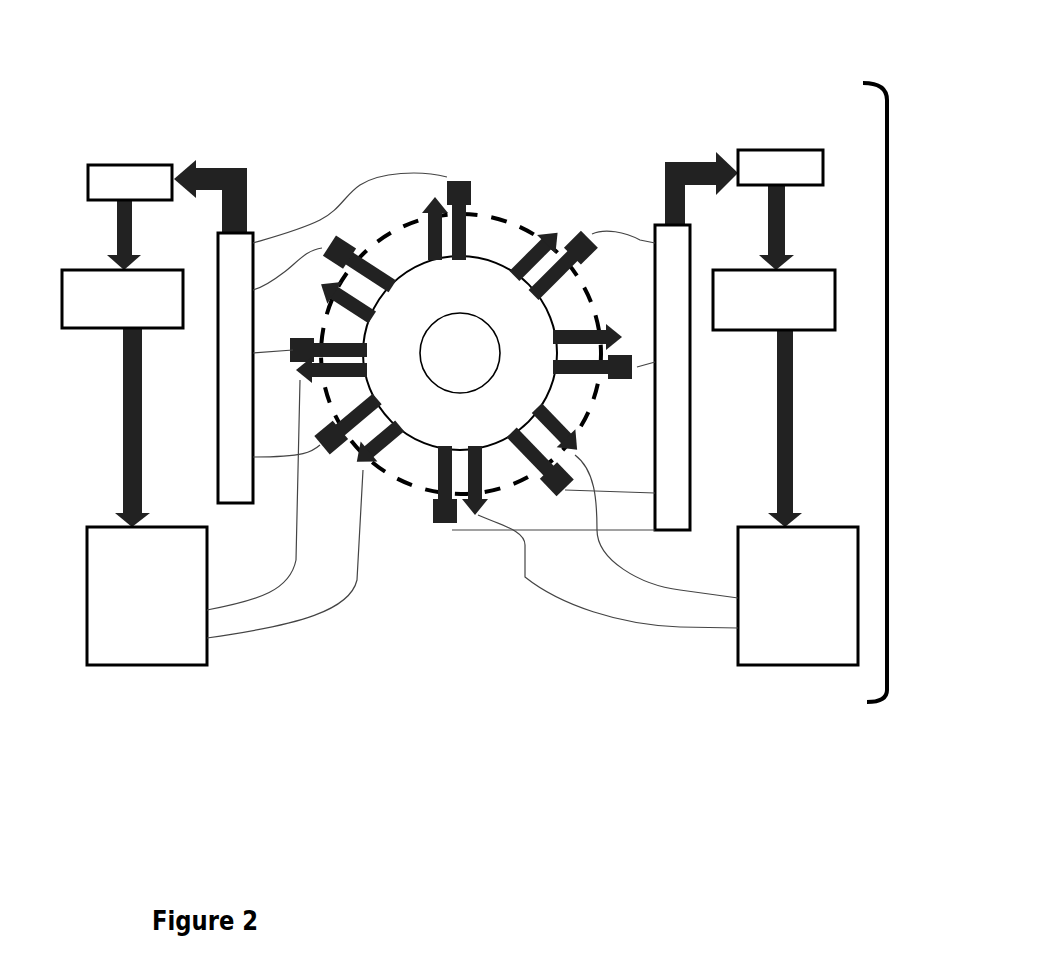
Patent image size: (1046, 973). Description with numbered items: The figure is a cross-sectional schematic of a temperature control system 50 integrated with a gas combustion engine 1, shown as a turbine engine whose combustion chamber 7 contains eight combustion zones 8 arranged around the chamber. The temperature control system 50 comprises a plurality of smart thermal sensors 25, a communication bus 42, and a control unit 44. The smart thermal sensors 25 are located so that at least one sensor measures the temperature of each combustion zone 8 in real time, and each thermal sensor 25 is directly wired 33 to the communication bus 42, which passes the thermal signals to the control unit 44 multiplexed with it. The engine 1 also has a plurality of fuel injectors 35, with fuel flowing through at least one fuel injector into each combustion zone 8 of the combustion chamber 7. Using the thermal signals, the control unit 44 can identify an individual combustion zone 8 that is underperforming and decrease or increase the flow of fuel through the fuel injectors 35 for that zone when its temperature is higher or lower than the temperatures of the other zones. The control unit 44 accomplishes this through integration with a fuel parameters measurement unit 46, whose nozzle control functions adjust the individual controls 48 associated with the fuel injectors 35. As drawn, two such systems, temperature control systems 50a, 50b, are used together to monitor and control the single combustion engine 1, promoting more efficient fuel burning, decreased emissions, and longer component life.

The gas combustion engine 1 is at (346, 143).
The combustion chamber 7 is at (477, 295).
The combustion zones 8 is at (395, 317).
The smart thermal sensors 25 is at (627, 376).
The wiring 33 is at (338, 194).
The fuel injectors 35 is at (533, 258).
The communication bus 42 is at (235, 380).
The control unit 44 is at (107, 185).
The fuel parameters measurement unit 46 is at (92, 313).
The individual controls 48 is at (172, 543).
The temperature control system 50 is at (887, 390).
The temperature control system 50a is at (680, 120).
The temperature control system 50b is at (216, 126).